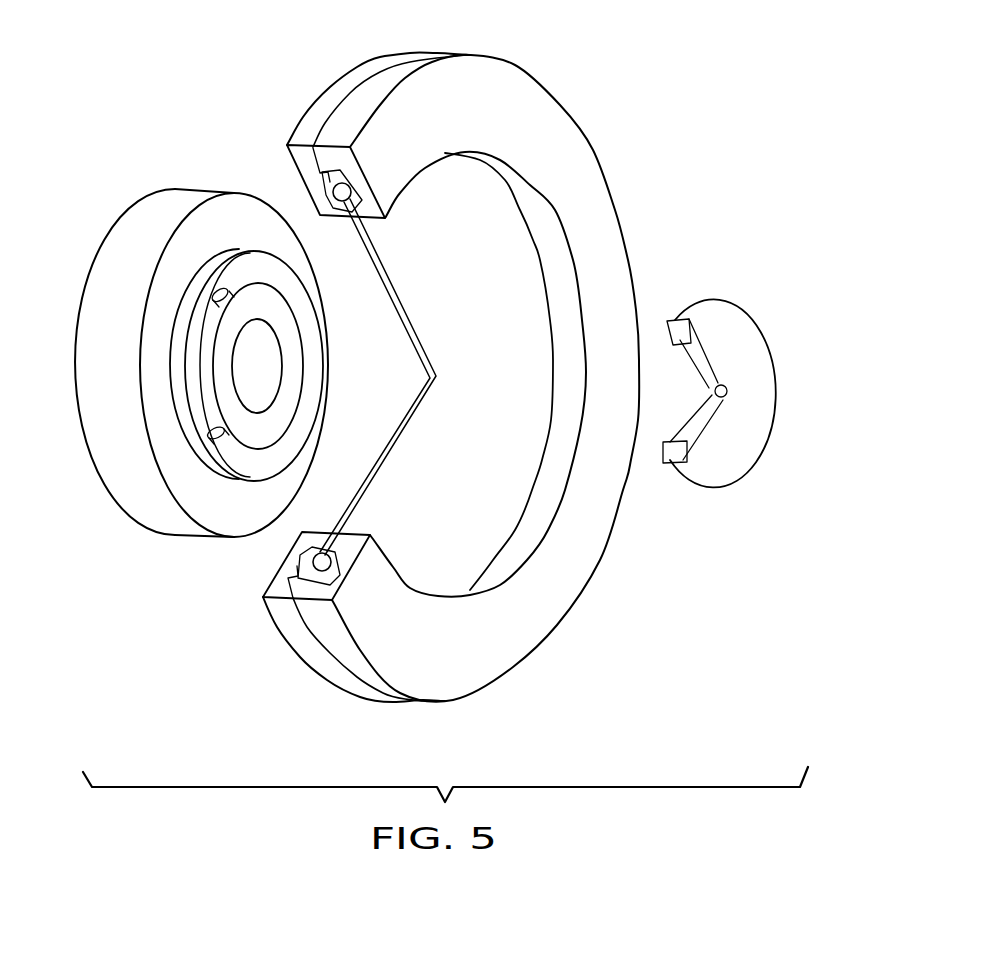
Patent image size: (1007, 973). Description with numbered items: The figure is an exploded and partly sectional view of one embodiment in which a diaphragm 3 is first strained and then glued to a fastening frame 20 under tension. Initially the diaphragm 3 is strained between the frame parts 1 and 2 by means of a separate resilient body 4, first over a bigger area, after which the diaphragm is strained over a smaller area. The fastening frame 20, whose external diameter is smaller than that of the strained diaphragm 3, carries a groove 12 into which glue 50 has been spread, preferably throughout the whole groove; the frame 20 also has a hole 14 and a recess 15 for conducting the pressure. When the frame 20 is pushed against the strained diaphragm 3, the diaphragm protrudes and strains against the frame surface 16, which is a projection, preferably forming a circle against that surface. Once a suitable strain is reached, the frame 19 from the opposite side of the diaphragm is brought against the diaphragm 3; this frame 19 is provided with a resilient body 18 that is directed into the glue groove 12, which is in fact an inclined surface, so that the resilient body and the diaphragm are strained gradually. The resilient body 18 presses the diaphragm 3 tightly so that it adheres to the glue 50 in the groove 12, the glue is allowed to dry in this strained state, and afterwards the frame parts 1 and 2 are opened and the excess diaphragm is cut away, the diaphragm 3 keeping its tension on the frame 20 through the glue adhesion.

The frame part 1 is at (507, 85).
The frame part 2 is at (307, 162).
The diaphragm 3 is at (468, 533).
The resilient body 4 is at (335, 562).
The groove 12 is at (667, 458).
The hole 14 is at (727, 383).
The recess 15 is at (690, 363).
The frame surface 16 is at (672, 450).
The resilient body 18 is at (247, 458).
The frame 19 is at (97, 447).
The fastening frame 20 is at (724, 315).
The glue 50 is at (668, 325).